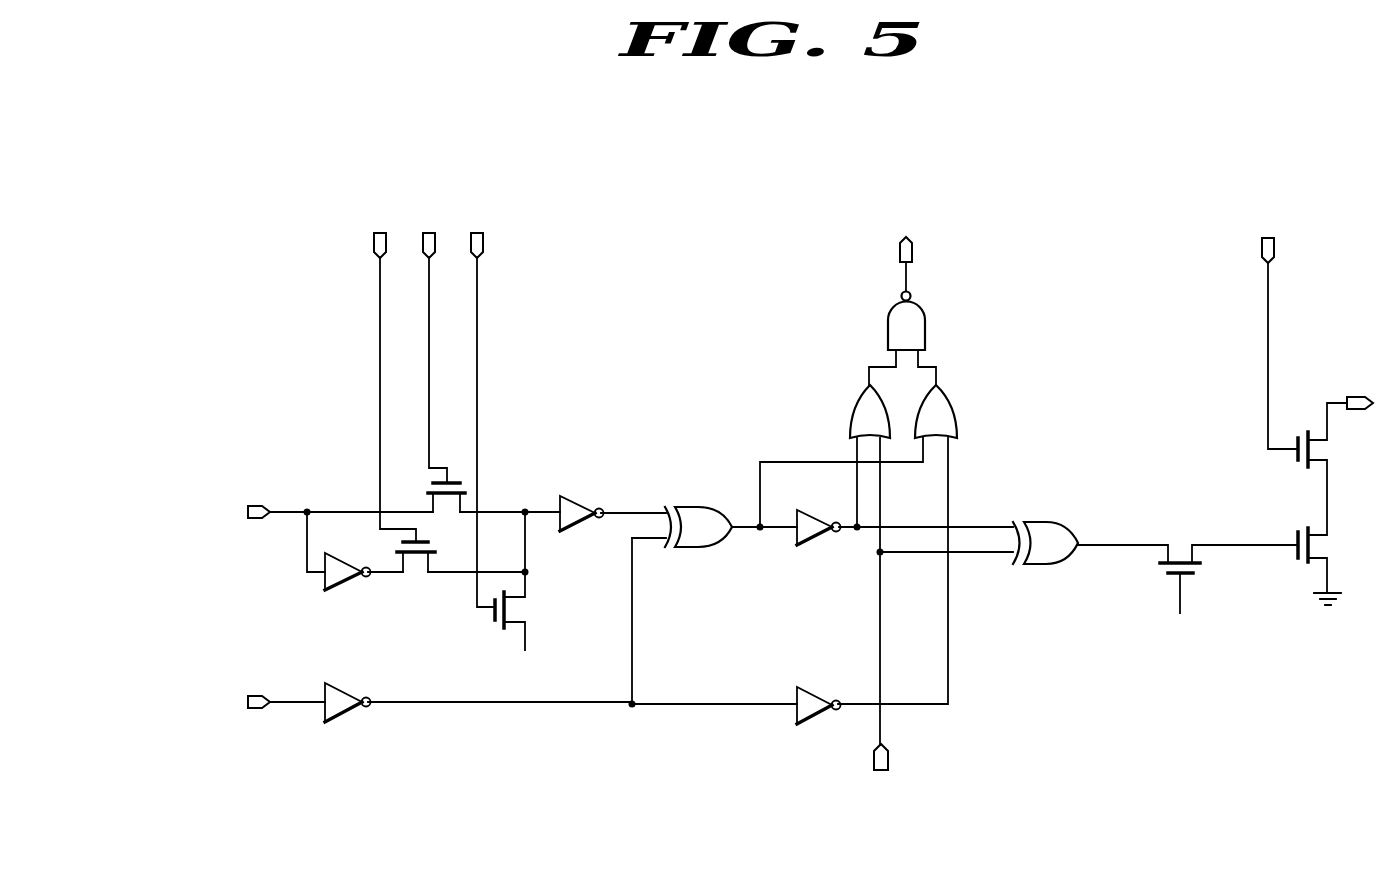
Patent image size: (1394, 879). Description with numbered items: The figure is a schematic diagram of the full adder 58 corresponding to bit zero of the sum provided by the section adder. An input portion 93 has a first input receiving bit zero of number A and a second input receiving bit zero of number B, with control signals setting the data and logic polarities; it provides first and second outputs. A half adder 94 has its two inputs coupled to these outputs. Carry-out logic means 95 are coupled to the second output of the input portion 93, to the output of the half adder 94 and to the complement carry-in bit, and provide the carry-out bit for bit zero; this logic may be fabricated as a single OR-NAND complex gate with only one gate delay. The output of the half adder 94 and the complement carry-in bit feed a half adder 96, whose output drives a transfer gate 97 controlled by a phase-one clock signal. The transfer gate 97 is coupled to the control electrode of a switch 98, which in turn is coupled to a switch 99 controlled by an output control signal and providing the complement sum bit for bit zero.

The full adder 58 is at (280, 73).
The input portion 93 is at (333, 417).
The half adder 94 is at (688, 450).
The carry-out logic means 95 is at (846, 298).
The half adder 96 is at (1035, 494).
The transfer gate 97 is at (1157, 504).
The switch 98 is at (1303, 572).
The switch 99 is at (1298, 467).